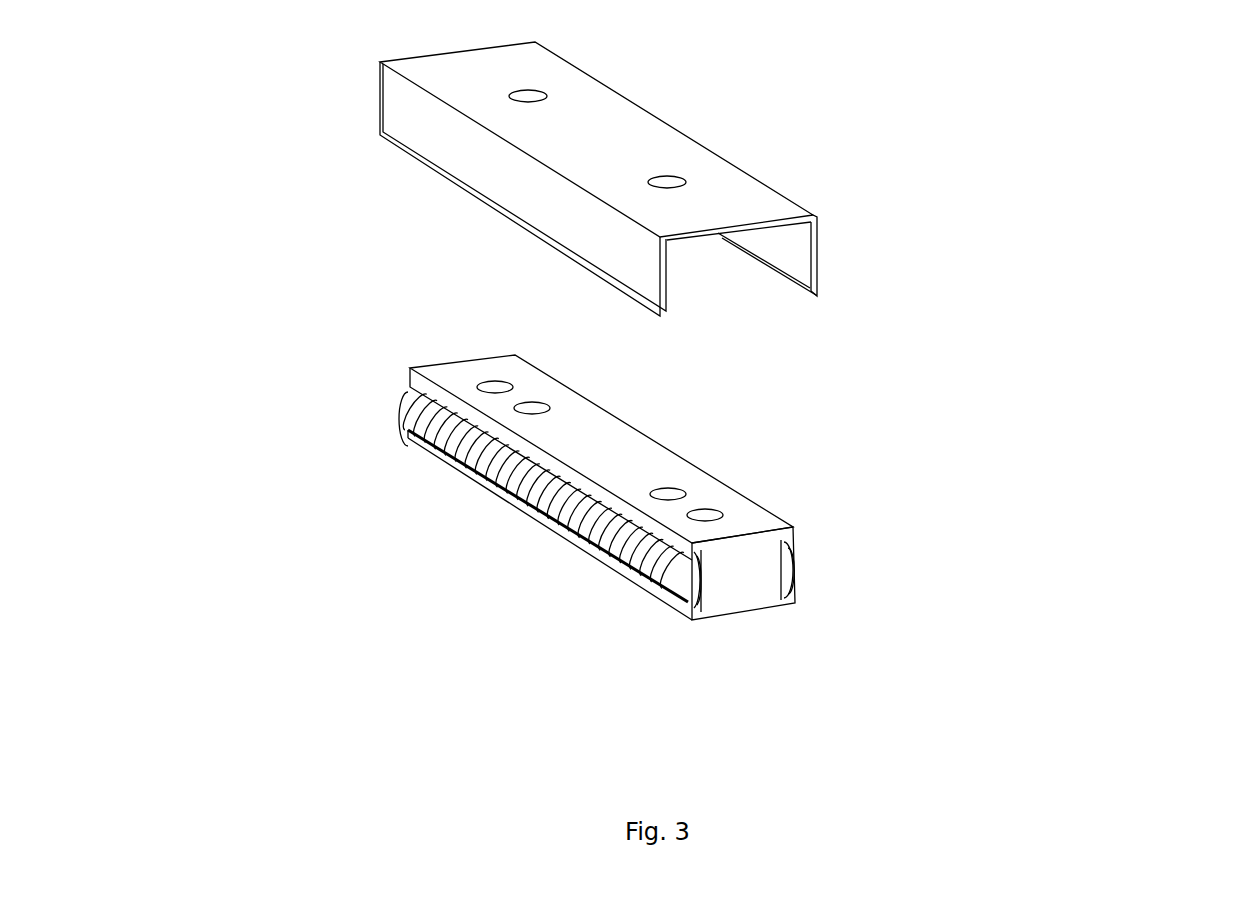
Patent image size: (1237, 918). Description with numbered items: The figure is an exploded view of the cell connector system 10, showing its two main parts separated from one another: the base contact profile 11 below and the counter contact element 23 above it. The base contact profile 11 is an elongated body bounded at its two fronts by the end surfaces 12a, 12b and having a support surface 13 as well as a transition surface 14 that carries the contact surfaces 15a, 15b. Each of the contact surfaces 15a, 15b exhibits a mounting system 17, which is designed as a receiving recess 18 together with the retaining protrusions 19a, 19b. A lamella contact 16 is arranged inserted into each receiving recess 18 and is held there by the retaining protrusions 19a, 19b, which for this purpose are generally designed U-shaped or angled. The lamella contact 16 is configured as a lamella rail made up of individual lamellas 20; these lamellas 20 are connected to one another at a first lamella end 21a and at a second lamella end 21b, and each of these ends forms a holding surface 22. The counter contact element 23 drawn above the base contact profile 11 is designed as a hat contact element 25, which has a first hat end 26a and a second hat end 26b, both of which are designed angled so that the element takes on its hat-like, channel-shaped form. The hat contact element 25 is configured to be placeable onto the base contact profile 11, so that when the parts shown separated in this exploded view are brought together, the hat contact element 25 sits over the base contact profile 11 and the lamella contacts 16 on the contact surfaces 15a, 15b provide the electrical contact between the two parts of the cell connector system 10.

The cell connector system 10 is at (855, 353).
The base contact profile 11 is at (462, 363).
The end surface 12a is at (772, 588).
The end surface 12b is at (411, 385).
The support surface 13 is at (766, 616).
The transition surface 14 is at (598, 442).
The contact surface 15a is at (698, 590).
The contact surface 15b is at (789, 580).
The lamella contact 16 is at (666, 551).
The mounting system 17 is at (771, 570).
The receiving recess 18 is at (771, 570).
The retaining protrusion 19a is at (565, 480).
The retaining protrusion 19b is at (507, 503).
The lamella 20 is at (618, 560).
The first lamella end 21a is at (697, 548).
The second lamella end 21b is at (691, 609).
The holding surface 22 is at (710, 561).
The counter contact element 23 is at (500, 175).
The hat contact element 25 is at (480, 82).
The first hat end 26a is at (510, 173).
The second hat end 26b is at (817, 256).